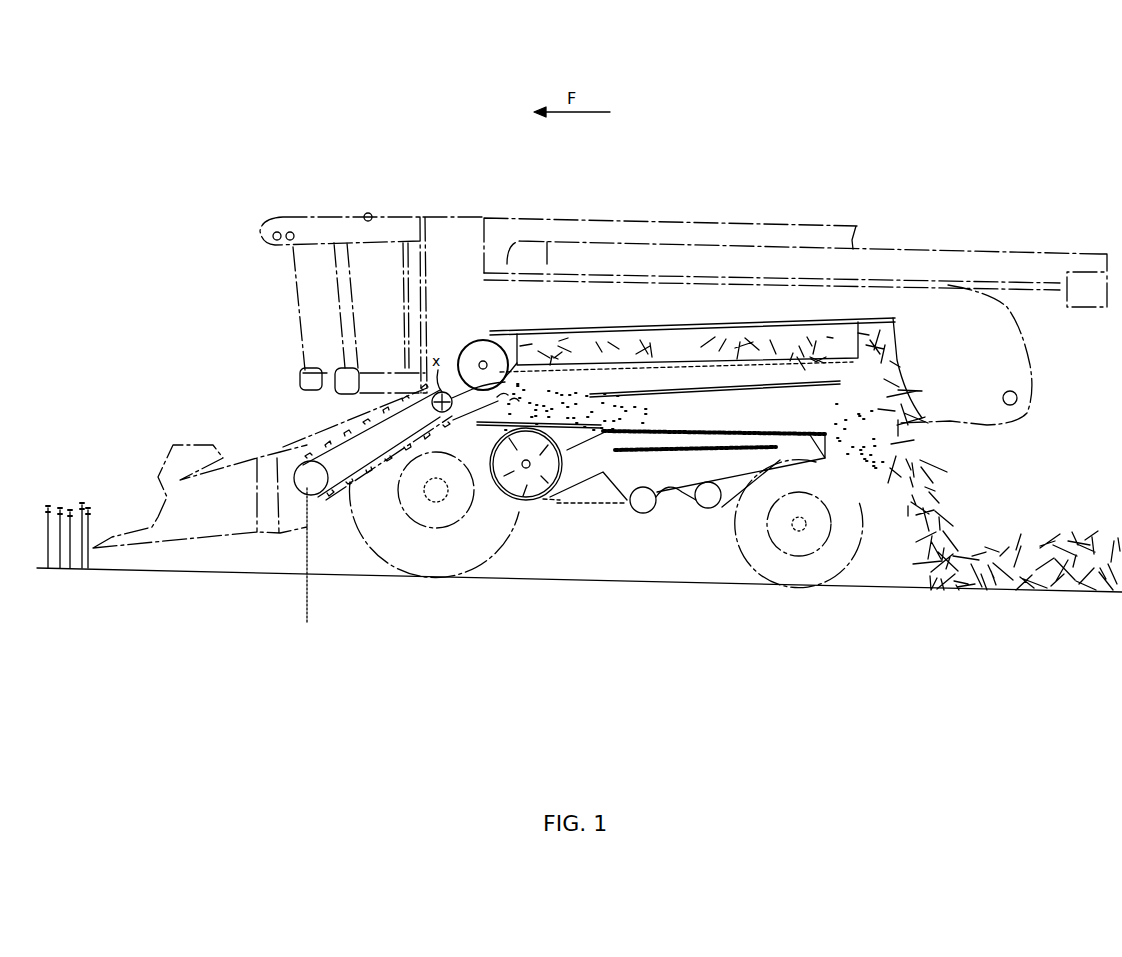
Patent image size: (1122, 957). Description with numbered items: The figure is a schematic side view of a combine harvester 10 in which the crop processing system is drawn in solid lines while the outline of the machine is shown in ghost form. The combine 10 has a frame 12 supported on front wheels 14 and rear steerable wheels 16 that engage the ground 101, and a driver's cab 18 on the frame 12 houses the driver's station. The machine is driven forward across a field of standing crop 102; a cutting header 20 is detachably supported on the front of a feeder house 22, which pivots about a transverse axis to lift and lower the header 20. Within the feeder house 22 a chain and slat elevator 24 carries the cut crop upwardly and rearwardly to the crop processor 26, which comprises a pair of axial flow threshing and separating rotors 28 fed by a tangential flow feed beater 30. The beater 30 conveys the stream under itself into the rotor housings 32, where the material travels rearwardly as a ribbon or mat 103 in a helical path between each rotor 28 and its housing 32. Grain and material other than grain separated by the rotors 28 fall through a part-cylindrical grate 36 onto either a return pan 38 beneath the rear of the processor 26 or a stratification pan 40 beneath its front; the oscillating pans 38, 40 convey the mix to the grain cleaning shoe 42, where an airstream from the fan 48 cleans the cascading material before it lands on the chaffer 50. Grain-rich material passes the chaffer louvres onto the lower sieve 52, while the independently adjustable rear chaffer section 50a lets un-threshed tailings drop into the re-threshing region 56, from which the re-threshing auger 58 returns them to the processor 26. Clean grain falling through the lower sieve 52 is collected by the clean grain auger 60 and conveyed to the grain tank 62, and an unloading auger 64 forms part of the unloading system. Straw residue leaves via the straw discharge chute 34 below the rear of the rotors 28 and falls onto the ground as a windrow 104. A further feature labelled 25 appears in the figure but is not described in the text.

The combine harvester 10 is at (325, 140).
The frame 12 is at (592, 506).
The front wheels 14 is at (378, 557).
The rear steerable wheels 16 is at (838, 580).
The driver's cab 18 is at (368, 212).
The cutting header 20 is at (184, 428).
The feeder house 22 is at (323, 441).
The elevator 24 is at (326, 496).
The reference axis 25 is at (308, 566).
The crop processor 26 is at (549, 322).
The axial flow threshing and separating rotors 28 is at (647, 327).
The feed beater 30 is at (473, 340).
The rotor housing 32 is at (597, 330).
The straw discharge chute 34 is at (900, 371).
The part-cylindrical grate 36 is at (505, 405).
The return pan 38 is at (797, 388).
The stratification pan 40 is at (481, 425).
The grain cleaning shoe 42 is at (686, 493).
The fan 48 is at (534, 498).
The chaffer 50 is at (721, 431).
The rear section of chaffer 50a is at (829, 452).
The lower sieve 52 is at (661, 452).
The re-threshing region 56 is at (750, 478).
The re-threshing auger 58 is at (709, 508).
The clean grain auger 60 is at (643, 513).
The grain tank 62 is at (610, 217).
The unloading auger 64 is at (963, 250).
The ground 101 is at (227, 579).
The standing crop 102 is at (88, 506).
The ribbon or mat 103 is at (742, 335).
The windrow 104 is at (1050, 522).